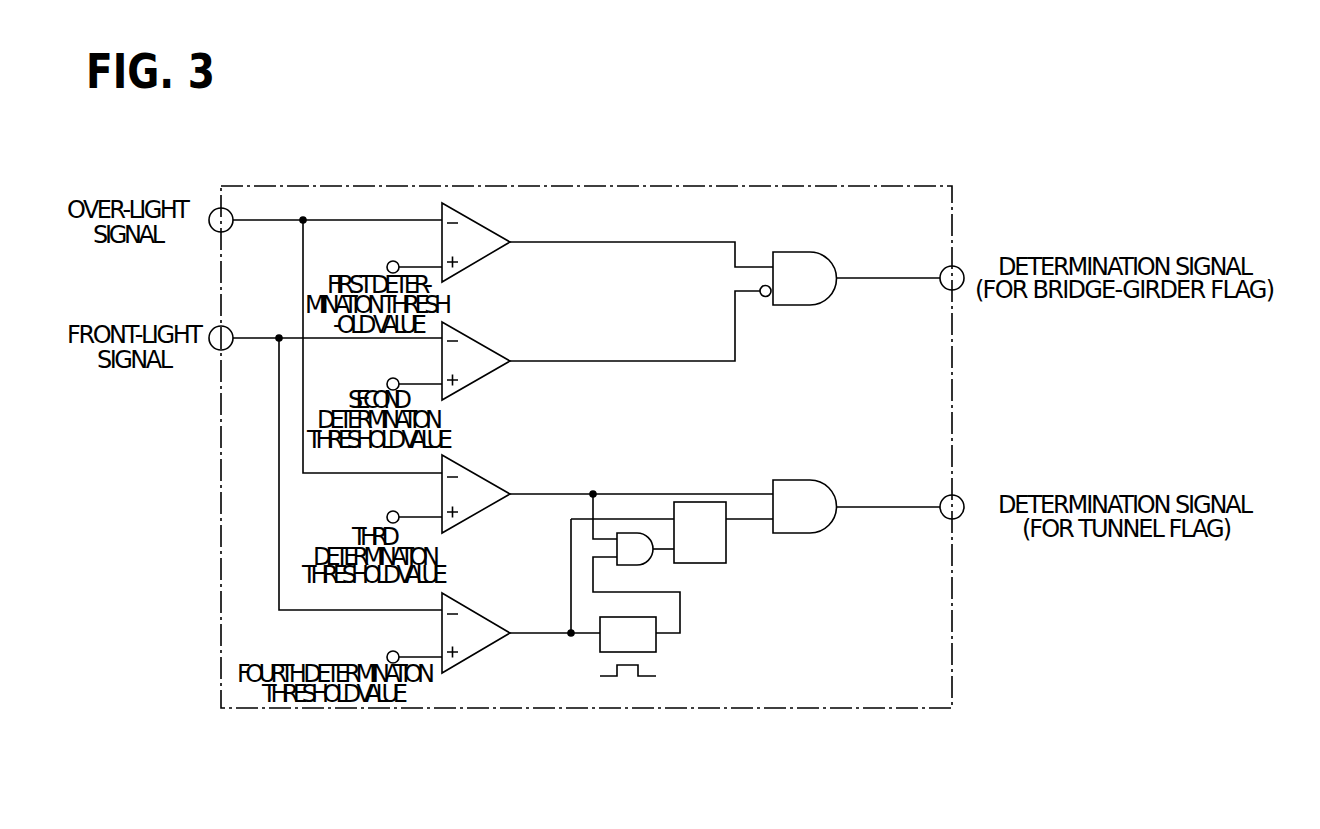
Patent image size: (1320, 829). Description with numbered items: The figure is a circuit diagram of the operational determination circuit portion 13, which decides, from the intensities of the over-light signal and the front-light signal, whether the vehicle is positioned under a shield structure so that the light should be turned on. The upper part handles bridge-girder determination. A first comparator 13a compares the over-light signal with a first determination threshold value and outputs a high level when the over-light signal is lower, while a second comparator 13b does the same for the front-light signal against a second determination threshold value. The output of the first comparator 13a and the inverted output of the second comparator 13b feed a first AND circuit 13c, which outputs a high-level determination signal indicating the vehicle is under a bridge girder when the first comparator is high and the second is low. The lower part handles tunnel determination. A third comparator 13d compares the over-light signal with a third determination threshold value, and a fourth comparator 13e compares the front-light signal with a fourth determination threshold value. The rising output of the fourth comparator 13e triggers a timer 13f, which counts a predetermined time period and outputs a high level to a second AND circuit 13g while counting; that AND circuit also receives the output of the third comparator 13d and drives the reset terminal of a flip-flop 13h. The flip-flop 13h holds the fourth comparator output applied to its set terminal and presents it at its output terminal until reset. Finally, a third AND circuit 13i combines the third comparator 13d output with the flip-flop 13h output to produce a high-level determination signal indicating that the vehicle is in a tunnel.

The operational determination circuit portion 13 is at (641, 186).
The first comparator 13a is at (477, 222).
The second comparator 13b is at (477, 335).
The first AND circuit 13c is at (802, 252).
The third comparator 13d is at (483, 476).
The fourth comparator 13e is at (477, 657).
The timer 13f is at (598, 640).
The second AND circuit 13g is at (645, 565).
The flip-flop 13h is at (710, 563).
The third AND circuit 13i is at (798, 533).